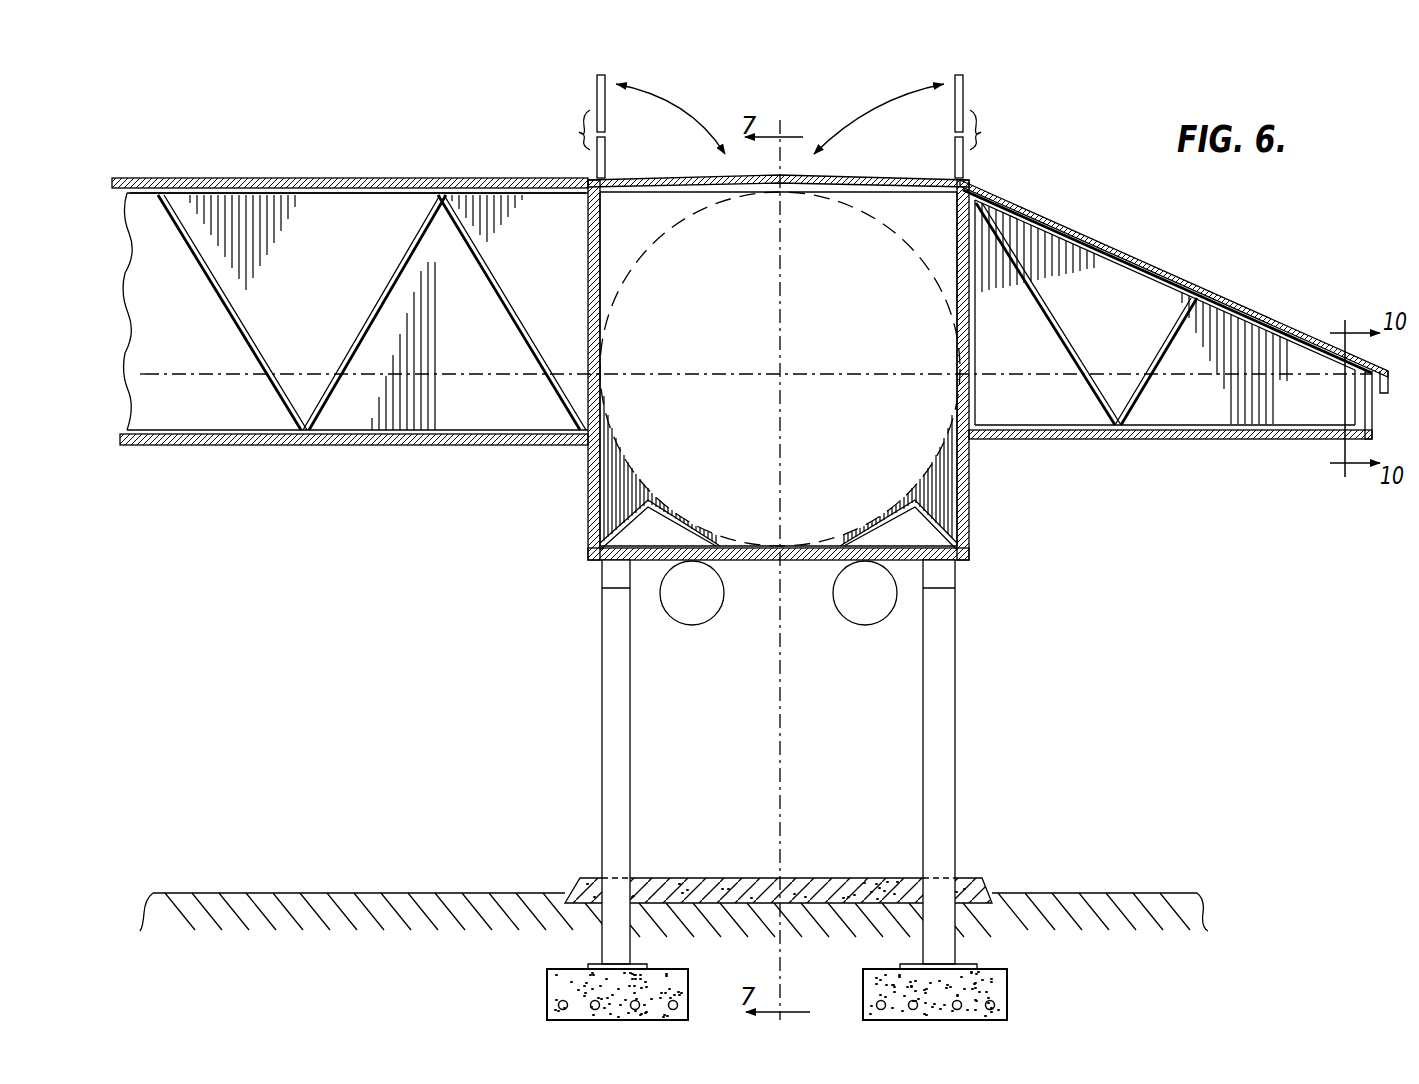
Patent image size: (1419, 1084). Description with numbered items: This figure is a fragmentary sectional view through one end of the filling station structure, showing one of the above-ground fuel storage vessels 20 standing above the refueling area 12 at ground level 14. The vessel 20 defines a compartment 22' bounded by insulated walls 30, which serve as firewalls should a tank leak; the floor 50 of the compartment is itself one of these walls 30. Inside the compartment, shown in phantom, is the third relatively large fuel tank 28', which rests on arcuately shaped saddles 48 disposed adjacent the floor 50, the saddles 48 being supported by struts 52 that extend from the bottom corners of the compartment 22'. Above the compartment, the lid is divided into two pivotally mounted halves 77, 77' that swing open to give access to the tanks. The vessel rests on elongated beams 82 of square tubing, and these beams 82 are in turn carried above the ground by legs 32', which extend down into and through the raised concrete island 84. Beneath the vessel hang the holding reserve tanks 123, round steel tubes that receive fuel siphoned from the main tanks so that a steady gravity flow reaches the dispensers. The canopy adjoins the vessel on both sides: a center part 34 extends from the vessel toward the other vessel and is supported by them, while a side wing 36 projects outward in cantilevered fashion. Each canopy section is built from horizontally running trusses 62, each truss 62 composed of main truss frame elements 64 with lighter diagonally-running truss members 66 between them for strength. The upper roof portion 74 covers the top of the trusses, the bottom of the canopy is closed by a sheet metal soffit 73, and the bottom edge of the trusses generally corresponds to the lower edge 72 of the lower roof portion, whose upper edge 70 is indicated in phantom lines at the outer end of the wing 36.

The refueling area 12 is at (366, 818).
The ground level 14 is at (1160, 893).
The fuel storage vessel 20 is at (972, 180).
The compartment 22' is at (806, 350).
The third relatively large fuel tank 28' is at (780, 369).
The walls 30 is at (596, 481).
The legs 32' is at (776, 764).
The center part 34 is at (352, 178).
The side wings 36 is at (1222, 298).
The saddles 48 is at (652, 489).
The floor 50 is at (812, 542).
The struts 52 is at (886, 533).
The trusses 62 is at (404, 268).
The main truss frame elements 64 is at (374, 192).
The diagonally-running truss members 66 is at (1163, 357).
The upper edge of lower roof portion 70 is at (1322, 370).
The lower edge of lower roof portion 72 is at (1060, 421).
The soffit 73 is at (1304, 440).
The upper roof portion 74 is at (432, 179).
The lid half 77 is at (570, 126).
The lid half 77' is at (989, 126).
The beams 82 is at (945, 579).
The raised concrete islands 84 is at (826, 887).
The holding reserve tanks 123 is at (857, 606).